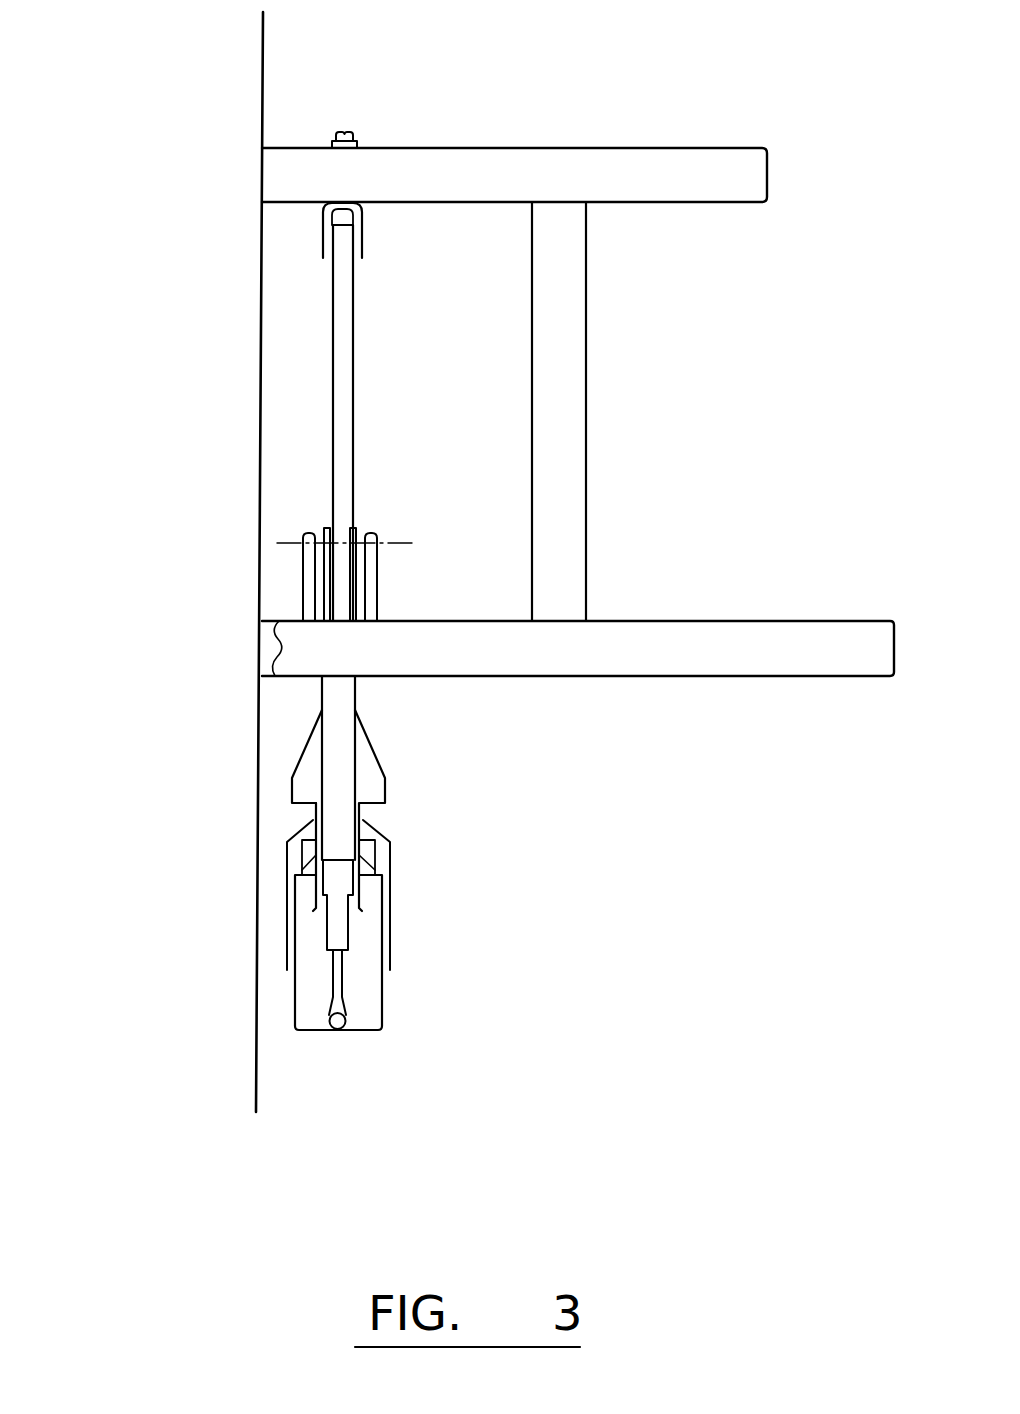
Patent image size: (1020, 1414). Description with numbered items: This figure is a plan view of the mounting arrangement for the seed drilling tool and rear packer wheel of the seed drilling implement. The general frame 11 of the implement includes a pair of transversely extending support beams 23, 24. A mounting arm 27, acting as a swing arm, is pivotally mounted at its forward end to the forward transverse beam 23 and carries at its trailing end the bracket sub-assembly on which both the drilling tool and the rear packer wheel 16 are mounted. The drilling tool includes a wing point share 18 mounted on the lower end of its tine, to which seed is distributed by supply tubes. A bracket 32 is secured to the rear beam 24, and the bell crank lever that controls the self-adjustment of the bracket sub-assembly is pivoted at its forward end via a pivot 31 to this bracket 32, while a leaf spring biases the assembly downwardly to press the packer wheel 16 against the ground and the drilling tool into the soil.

The frame 11 is at (572, 437).
The packer element 16 is at (380, 1003).
The wing point share 18 is at (372, 793).
The forward transverse beam 23 is at (703, 165).
The transverse support beam 24 is at (808, 647).
The mounting arm 27 is at (340, 415).
The pivot 31 is at (401, 542).
The bracket 32 is at (372, 593).